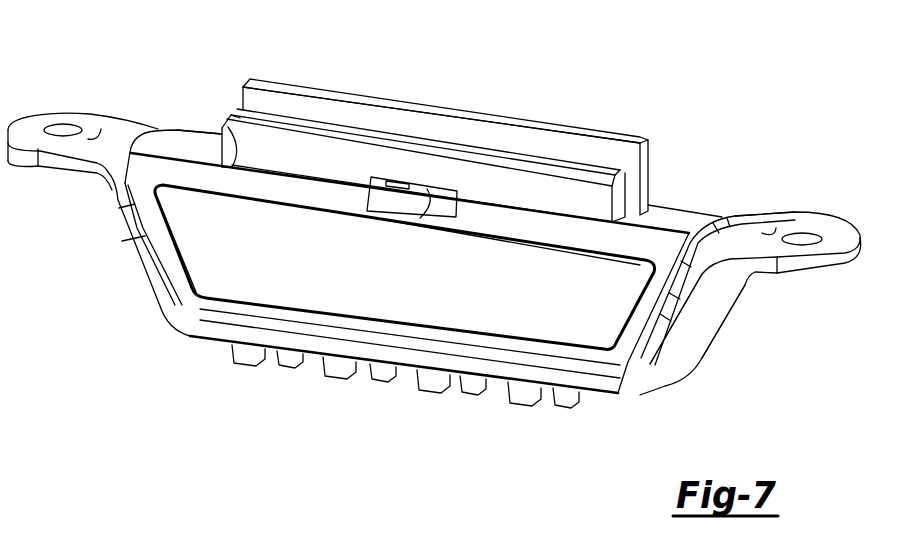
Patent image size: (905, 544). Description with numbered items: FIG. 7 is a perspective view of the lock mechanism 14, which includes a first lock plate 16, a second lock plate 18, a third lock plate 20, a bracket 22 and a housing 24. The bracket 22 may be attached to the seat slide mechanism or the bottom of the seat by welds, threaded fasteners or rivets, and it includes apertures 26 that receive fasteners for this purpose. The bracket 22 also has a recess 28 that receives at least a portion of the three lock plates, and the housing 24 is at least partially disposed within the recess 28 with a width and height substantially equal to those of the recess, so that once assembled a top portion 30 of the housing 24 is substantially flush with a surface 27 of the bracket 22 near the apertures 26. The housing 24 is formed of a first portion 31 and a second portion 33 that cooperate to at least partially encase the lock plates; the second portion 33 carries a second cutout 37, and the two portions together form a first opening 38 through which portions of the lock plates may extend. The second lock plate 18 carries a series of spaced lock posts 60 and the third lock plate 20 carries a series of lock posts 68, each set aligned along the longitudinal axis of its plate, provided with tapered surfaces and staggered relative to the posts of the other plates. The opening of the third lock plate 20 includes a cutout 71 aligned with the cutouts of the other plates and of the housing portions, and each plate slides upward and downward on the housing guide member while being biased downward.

The lock mechanism 14 is at (441, 70).
The first lock plate 16 is at (598, 128).
The second lock plate 18 is at (545, 135).
The third lock plate 20 is at (283, 135).
The bracket 22 is at (712, 334).
The housing 24 is at (186, 132).
The apertures 26 is at (62, 127).
The surface 27 is at (96, 130).
The recess 28 is at (183, 318).
The top portion 30 is at (703, 222).
The first portion 31 is at (672, 208).
The second portion 33 is at (684, 228).
The second cutout 37 is at (364, 191).
The first opening 38 is at (227, 125).
The lock posts 60 is at (285, 362).
The lock posts 68 is at (247, 362).
The cutout 71 is at (430, 221).